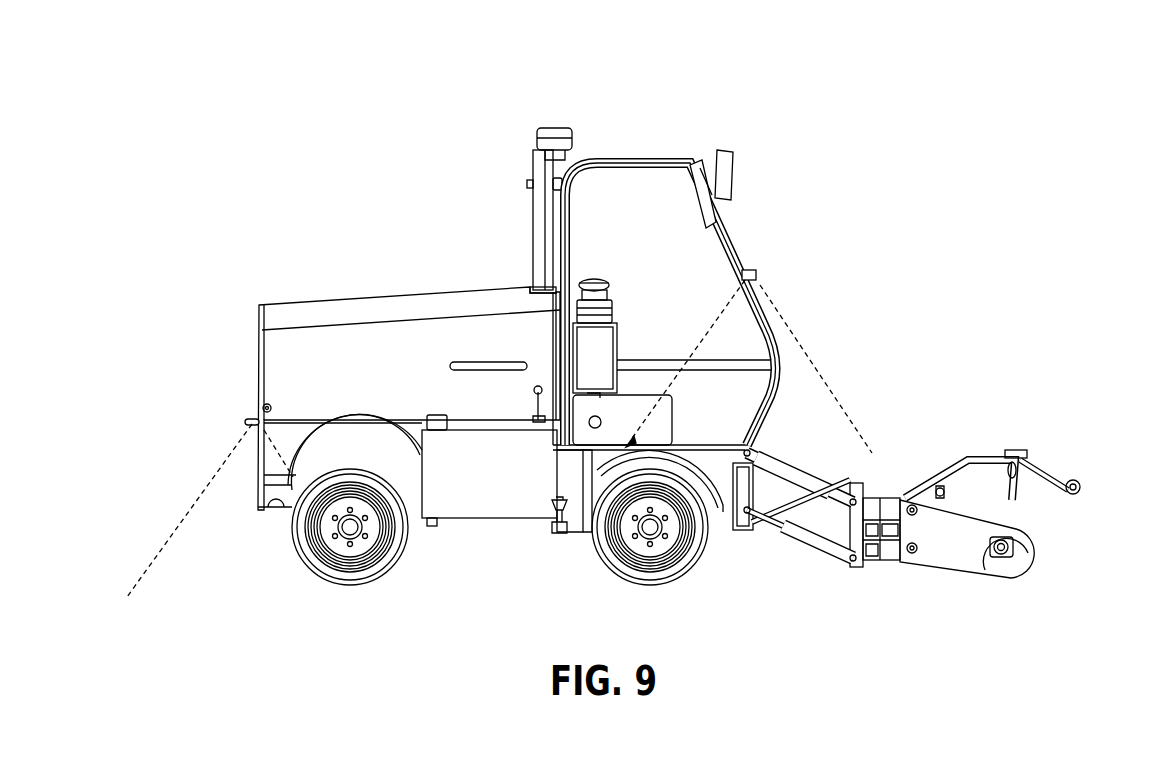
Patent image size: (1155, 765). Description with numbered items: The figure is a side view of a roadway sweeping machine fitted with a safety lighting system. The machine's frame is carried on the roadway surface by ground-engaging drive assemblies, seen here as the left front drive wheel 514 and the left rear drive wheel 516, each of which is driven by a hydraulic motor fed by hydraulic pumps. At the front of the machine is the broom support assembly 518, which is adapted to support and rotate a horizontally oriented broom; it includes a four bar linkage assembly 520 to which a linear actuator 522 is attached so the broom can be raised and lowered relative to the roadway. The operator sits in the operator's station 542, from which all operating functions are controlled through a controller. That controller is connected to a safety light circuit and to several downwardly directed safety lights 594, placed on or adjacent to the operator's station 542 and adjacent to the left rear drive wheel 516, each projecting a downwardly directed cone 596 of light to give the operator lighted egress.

The left front drive wheel 514 is at (600, 568).
The left rear drive wheel 516 is at (304, 573).
The broom support assembly 518 is at (1038, 540).
The four bar linkage assembly 520 is at (782, 548).
The linear actuator 522 is at (811, 558).
The operator's station 542 is at (637, 155).
The safety lights 594 is at (758, 268).
The cone of light 596 is at (710, 312).